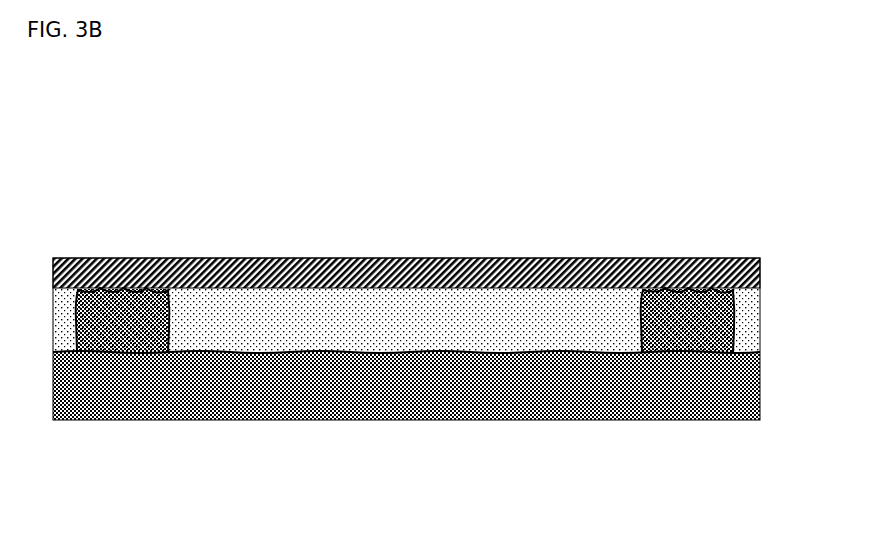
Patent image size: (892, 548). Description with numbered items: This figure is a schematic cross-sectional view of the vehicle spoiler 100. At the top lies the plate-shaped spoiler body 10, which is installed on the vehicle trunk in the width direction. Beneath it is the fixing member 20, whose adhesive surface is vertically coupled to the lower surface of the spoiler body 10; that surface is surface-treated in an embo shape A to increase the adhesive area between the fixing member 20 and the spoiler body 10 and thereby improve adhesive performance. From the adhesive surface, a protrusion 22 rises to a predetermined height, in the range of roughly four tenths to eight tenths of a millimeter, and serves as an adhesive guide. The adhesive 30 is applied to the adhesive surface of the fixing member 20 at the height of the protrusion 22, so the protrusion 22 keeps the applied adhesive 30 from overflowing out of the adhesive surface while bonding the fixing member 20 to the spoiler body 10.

The vehicle spoiler 100 is at (704, 99).
The spoiler body 10 is at (760, 272).
The fixing member 20 is at (637, 402).
The protrusion 22 is at (168, 288).
The adhesive 30 is at (295, 330).
The embo shape A is at (108, 267).